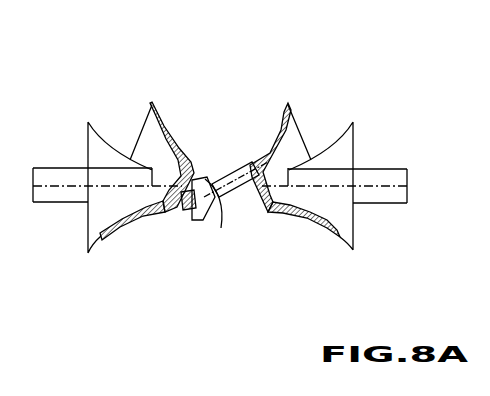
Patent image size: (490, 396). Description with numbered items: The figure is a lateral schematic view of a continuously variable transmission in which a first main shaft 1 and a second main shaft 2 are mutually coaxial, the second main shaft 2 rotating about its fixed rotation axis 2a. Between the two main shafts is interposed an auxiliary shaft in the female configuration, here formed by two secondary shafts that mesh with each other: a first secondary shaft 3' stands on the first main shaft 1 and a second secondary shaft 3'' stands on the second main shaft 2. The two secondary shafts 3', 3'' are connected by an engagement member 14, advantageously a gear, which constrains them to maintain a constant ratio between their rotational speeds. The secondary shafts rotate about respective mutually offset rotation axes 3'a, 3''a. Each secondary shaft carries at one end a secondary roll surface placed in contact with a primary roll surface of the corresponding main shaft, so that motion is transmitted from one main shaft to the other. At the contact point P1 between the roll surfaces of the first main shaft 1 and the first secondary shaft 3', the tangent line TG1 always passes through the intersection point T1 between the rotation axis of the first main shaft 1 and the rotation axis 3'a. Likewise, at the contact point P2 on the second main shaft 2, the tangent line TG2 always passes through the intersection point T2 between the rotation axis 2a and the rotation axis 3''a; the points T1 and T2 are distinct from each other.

The first main shaft 1 is at (83, 213).
The second main shaft 2 is at (361, 165).
The rotation axis of the second main shaft 2a is at (392, 227).
The contact point P1 is at (95, 179).
The contact point P2 is at (351, 172).
The intersection point T1 is at (134, 140).
The intersection point T2 is at (311, 141).
The tangent line TG1 is at (131, 235).
The tangent line TG2 is at (277, 256).
The first secondary shaft 3' is at (158, 245).
The rotation axis of the first secondary shaft 3'a is at (218, 153).
The second secondary shaft 3'' is at (246, 214).
The rotation axis of the second secondary shaft 3''a is at (236, 160).
The engagement member 14 is at (178, 256).